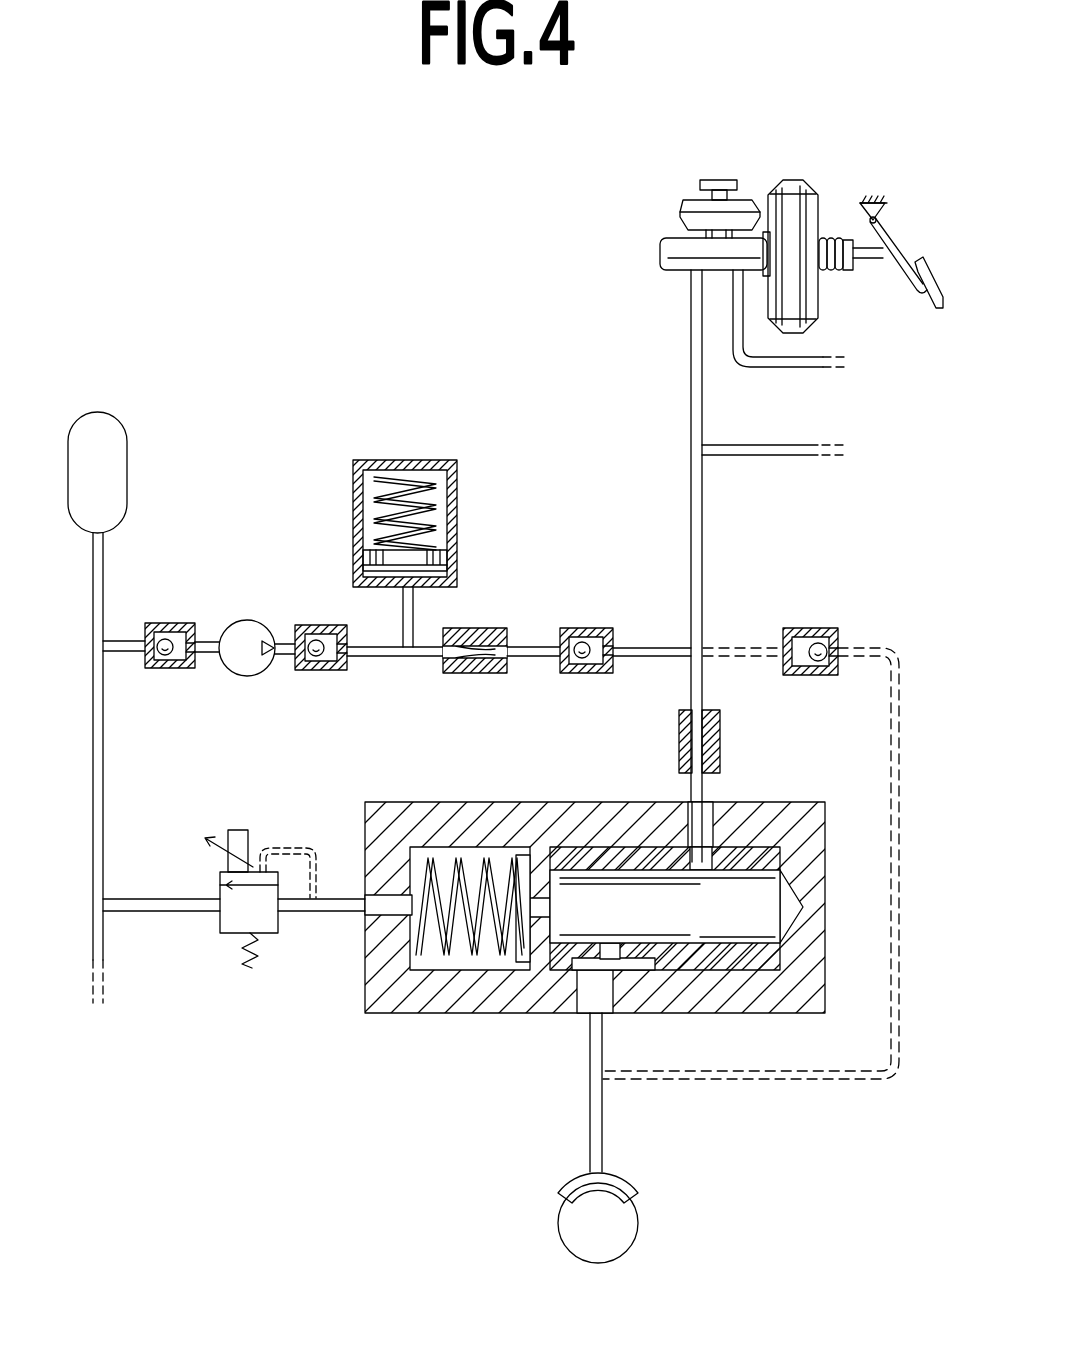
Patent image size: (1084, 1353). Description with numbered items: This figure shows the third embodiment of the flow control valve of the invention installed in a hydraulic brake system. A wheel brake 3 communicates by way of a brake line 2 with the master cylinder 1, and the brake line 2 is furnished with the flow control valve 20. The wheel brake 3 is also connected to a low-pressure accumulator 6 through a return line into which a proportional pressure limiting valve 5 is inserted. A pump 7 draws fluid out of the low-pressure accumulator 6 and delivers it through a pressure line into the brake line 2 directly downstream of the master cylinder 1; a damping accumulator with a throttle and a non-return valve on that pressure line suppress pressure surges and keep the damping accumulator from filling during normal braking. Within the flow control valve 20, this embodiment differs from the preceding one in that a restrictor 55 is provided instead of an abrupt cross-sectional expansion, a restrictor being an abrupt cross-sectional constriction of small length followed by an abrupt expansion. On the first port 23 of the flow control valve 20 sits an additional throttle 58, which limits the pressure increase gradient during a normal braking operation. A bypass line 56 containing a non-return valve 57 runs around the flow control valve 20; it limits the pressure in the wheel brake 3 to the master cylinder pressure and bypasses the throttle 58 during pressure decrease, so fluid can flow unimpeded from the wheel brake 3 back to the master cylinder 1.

The master cylinder 1 is at (660, 240).
The brake line 2 is at (691, 413).
The wheel brake 3 is at (638, 1202).
The proportional pressure limiting valve 5 is at (233, 922).
The low-pressure accumulator 6 is at (120, 457).
The pump 7 is at (242, 627).
The flow control valve 20 is at (829, 839).
The first port 23 is at (693, 801).
The restrictor 55 is at (553, 905).
The bypass line 56 is at (888, 724).
The non-return valve 57 is at (822, 627).
The throttle 58 is at (722, 749).